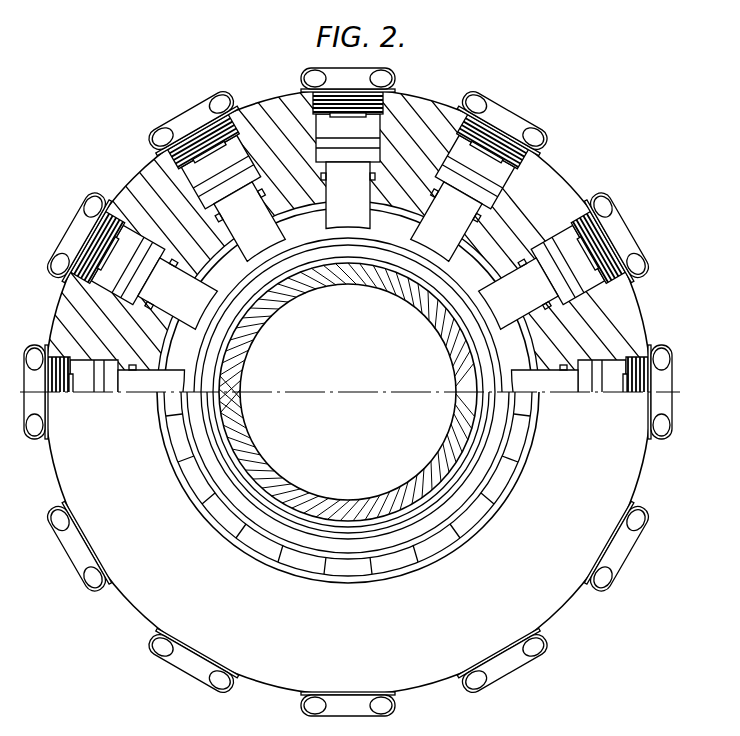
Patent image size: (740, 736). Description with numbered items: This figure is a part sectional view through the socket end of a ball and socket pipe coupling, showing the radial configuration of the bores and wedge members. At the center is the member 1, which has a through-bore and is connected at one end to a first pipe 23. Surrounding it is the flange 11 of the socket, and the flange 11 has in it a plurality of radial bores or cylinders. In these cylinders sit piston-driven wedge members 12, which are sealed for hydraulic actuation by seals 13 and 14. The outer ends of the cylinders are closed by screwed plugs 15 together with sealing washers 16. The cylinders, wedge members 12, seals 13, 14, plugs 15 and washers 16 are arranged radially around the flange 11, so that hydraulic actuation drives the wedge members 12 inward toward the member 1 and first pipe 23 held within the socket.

The member 1 is at (316, 281).
The flange 11 is at (553, 180).
The wedge members 12 is at (340, 193).
The seal 13 is at (379, 163).
The seal 14 is at (425, 138).
The screwed plugs 15 is at (497, 122).
The sealing washers 16 is at (546, 148).
The first pipe 23 is at (320, 507).